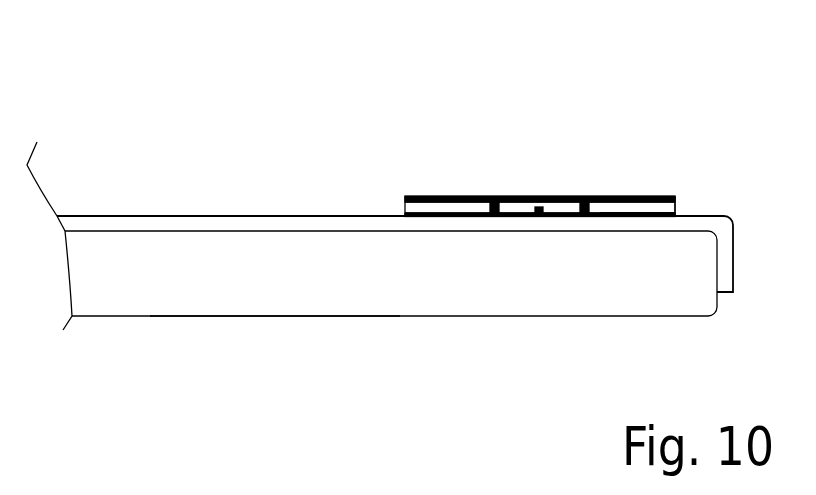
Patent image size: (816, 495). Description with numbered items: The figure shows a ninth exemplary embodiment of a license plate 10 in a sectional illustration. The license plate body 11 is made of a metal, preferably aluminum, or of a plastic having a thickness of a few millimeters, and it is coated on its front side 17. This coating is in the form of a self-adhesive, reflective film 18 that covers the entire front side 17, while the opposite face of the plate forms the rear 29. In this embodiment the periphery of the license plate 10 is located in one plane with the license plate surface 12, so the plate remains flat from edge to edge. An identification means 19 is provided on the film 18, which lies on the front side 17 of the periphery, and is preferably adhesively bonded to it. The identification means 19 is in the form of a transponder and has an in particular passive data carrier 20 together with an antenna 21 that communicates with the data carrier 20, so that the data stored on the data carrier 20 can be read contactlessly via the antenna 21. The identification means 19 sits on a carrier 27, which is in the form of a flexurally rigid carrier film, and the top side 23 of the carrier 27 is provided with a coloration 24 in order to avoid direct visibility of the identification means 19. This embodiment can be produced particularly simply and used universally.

The license plate 10 is at (160, 163).
The license plate body 11 is at (340, 260).
The license plate surface 12 is at (92, 172).
The front side 17 is at (150, 232).
The film 18 is at (230, 222).
The identification means 19 is at (528, 155).
The data carrier 20 is at (541, 216).
The antenna 21 is at (492, 203).
The top side 23 is at (677, 205).
The coloration 24 is at (422, 196).
The carrier 27 is at (657, 207).
The rear 29 is at (217, 317).